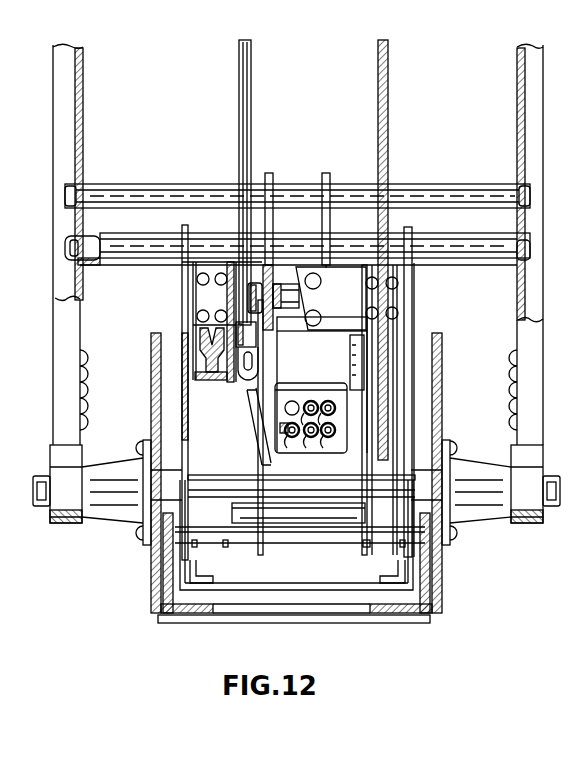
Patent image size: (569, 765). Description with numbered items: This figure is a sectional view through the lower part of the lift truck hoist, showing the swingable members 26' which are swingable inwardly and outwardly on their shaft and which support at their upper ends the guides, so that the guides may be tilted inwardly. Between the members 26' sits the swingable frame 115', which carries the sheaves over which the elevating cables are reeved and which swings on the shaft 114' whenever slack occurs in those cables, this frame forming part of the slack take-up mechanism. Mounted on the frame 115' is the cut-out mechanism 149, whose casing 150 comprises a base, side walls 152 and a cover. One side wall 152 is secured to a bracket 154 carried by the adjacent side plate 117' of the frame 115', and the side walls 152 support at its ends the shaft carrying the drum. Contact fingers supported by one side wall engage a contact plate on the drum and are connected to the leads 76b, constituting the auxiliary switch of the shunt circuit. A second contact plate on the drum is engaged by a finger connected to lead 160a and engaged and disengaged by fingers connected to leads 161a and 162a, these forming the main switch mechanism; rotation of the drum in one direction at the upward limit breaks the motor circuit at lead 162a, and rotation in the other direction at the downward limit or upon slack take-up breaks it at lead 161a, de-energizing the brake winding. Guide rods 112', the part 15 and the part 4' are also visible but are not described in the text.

The swingable members 26' is at (51, 244).
The guide rods 112' is at (296, 242).
The swingable frame 115' is at (317, 407).
The block 15 is at (296, 296).
The casing 150 is at (326, 331).
The side walls 152 is at (262, 352).
The leads 76b is at (345, 345).
The cut-out mechanism 149 is at (330, 378).
The bracket 154 is at (268, 376).
The side plate 117' is at (258, 438).
The lead 162a is at (322, 440).
The lead 161a is at (283, 446).
The lead 160a is at (313, 446).
The shaft 114' is at (296, 534).
The nut 4' is at (26, 501).